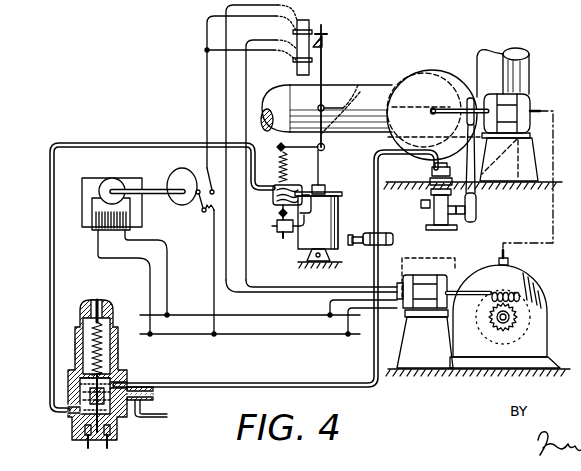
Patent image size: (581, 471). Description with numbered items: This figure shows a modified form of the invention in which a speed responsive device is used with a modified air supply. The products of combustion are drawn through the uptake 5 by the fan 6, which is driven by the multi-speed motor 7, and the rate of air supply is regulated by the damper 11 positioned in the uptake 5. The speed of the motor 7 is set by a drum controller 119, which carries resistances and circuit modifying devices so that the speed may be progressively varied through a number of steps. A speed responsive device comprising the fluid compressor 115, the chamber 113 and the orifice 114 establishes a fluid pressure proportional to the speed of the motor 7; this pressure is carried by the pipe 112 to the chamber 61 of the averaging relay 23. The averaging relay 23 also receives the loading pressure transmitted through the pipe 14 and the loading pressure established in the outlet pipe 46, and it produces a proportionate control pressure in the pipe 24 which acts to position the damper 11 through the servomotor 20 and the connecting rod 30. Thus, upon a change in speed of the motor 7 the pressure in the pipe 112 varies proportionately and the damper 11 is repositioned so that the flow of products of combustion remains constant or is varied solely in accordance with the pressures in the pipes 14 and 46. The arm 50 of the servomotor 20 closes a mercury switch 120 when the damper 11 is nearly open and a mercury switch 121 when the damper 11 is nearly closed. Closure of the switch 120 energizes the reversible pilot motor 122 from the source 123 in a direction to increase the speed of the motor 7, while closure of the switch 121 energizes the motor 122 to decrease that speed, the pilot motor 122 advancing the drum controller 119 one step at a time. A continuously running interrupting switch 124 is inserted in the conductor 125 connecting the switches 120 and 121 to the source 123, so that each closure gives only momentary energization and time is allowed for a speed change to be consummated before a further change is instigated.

The uptake 5 is at (388, 78).
The fan 6 is at (449, 62).
The multi-speed motor 7 is at (528, 105).
The damper 11 is at (341, 103).
The pipe 14 is at (75, 348).
The servomotor 20 is at (307, 205).
The averaging relay 23 is at (122, 343).
The pipe 24 is at (53, 262).
The connecting rod 30 is at (323, 67).
The outlet pipe 46 is at (143, 418).
The arm 50 is at (323, 38).
The chamber 61 is at (80, 368).
The pipe 112 is at (375, 264).
The chamber 113 is at (389, 224).
The orifice 114 is at (365, 235).
The fluid compressor 115 is at (427, 203).
The drum controller 119 is at (542, 288).
The mercury switch 120 is at (293, 33).
The mercury switch 121 is at (290, 63).
The reversible pilot motor 122 is at (425, 262).
The source 123 is at (277, 318).
The interrupting switch 124 is at (148, 200).
The conductor 125 is at (210, 308).